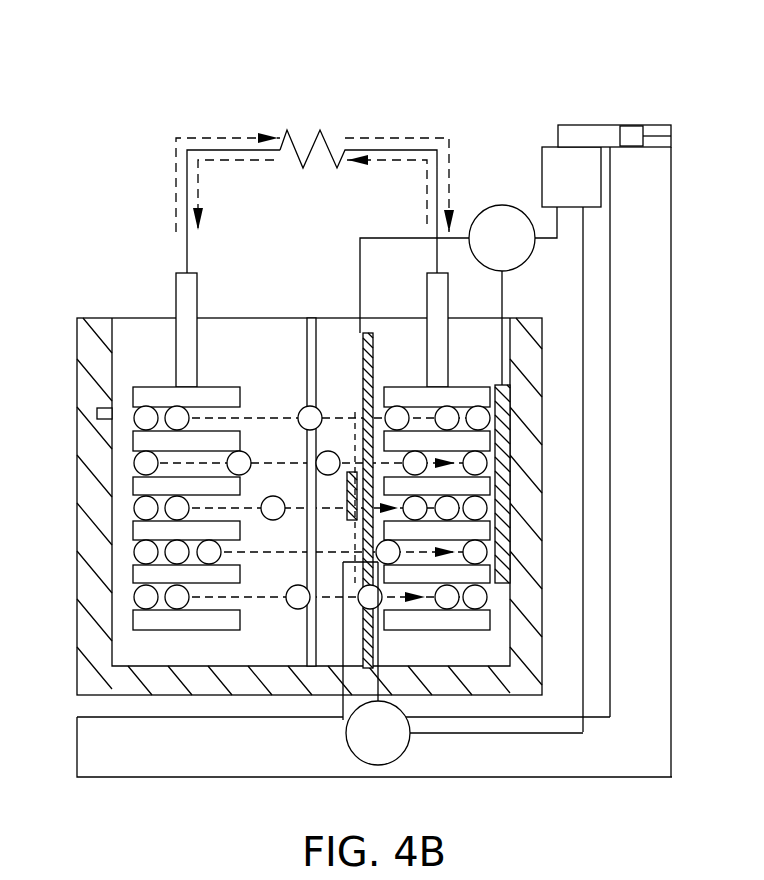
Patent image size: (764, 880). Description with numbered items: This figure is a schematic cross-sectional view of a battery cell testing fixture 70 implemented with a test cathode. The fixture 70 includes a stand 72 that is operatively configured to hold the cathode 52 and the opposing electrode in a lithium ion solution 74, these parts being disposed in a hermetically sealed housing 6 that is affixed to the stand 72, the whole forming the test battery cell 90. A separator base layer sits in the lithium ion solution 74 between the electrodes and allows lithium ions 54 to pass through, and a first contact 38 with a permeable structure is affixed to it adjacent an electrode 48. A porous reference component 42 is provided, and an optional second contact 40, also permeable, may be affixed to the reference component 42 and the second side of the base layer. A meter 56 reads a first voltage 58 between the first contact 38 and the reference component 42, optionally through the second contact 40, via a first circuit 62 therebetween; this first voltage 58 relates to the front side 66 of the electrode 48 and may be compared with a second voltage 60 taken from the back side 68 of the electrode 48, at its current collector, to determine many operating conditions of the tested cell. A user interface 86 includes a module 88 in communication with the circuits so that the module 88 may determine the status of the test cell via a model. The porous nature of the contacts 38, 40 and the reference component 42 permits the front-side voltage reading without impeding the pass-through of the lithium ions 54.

The hermetically sealed housing 6 is at (88, 440).
The first contact 38 is at (378, 553).
The second contact 40 is at (353, 428).
The reference component 42 is at (348, 505).
The electrode 48 is at (480, 620).
The cathode 52 is at (483, 575).
The lithium ions 54 is at (303, 409).
The meter 56 is at (556, 147).
The first voltage 58 is at (393, 762).
The second voltage 60 is at (480, 212).
The first circuit 62 is at (343, 705).
The front side 66 is at (383, 525).
The back side 68 is at (480, 531).
The battery cell testing fixture 70 is at (623, 92).
The stand 72 is at (657, 183).
The lithium ion solution 74 is at (132, 327).
The user interface 86 is at (662, 141).
The module 88 is at (637, 133).
The test battery cell 90 is at (78, 583).